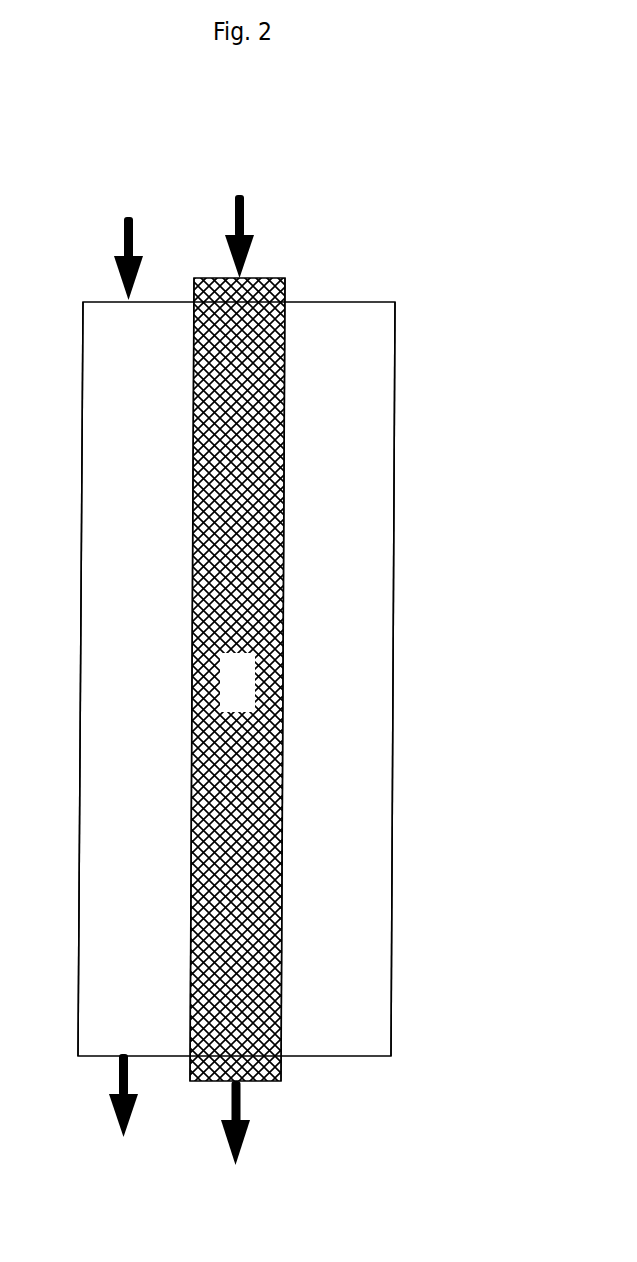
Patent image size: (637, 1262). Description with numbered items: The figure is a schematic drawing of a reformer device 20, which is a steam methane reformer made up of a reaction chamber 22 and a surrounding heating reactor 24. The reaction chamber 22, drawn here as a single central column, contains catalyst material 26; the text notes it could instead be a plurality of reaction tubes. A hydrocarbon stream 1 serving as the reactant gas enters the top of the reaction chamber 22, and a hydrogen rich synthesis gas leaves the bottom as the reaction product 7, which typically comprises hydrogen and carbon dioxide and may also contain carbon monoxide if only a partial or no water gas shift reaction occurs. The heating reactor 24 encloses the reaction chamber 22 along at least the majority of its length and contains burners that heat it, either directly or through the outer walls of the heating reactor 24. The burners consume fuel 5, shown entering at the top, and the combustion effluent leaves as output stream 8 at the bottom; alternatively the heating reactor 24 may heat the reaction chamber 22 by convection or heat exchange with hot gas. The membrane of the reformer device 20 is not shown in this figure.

The hydrocarbon stream 1 is at (239, 211).
The fuel 5 is at (128, 243).
The hydrogen rich synthesis gas 7 is at (227, 1125).
The output stream 8 is at (122, 1112).
The reformer device 20 is at (399, 273).
The reaction chamber 22 is at (291, 268).
The heating reactor 24 is at (158, 698).
The catalyst material 26 is at (251, 698).